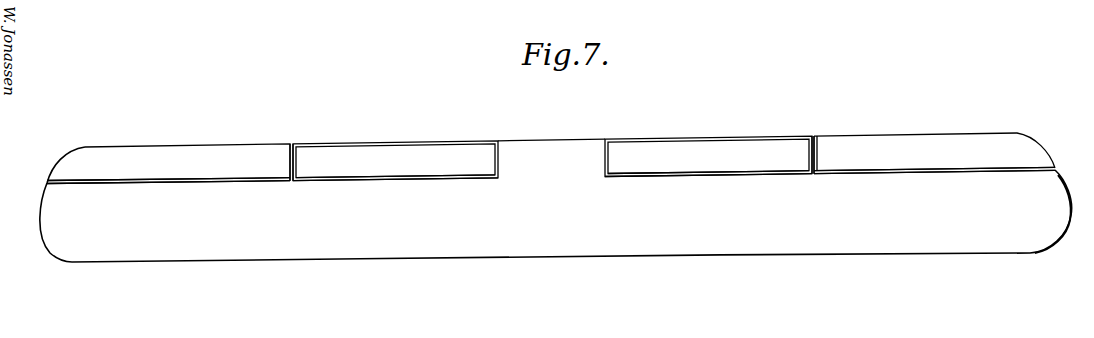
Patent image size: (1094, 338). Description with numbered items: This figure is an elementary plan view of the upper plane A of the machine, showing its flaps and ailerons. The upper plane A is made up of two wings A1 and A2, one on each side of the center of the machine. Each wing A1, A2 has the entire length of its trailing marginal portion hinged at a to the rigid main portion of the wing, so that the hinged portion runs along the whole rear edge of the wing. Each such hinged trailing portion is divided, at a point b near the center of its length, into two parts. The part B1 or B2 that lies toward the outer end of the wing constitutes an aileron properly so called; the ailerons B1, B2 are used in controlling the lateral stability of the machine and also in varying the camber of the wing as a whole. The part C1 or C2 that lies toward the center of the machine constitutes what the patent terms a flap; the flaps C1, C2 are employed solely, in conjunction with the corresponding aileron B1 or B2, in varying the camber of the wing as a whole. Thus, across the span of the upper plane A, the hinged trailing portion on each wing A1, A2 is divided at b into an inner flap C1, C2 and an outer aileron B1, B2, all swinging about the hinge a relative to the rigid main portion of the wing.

The upper plane A is at (540, 199).
The wing of the upper plane A1 is at (200, 204).
The wing of the upper plane A2 is at (896, 212).
The aileron B1 is at (182, 150).
The aileron B2 is at (913, 142).
The flap C1 is at (390, 150).
The flap C2 is at (703, 146).
The hinge a is at (912, 183).
The dividing point b is at (549, 149).